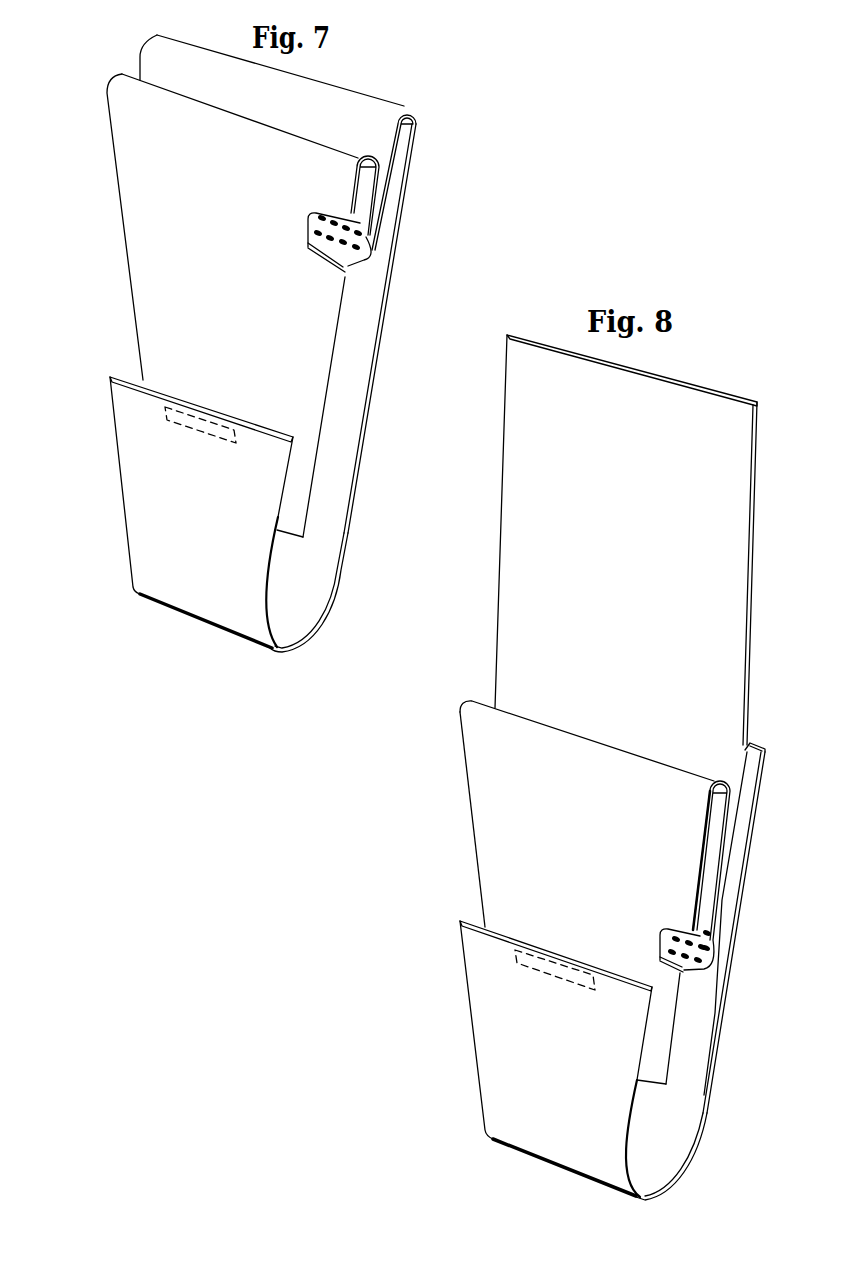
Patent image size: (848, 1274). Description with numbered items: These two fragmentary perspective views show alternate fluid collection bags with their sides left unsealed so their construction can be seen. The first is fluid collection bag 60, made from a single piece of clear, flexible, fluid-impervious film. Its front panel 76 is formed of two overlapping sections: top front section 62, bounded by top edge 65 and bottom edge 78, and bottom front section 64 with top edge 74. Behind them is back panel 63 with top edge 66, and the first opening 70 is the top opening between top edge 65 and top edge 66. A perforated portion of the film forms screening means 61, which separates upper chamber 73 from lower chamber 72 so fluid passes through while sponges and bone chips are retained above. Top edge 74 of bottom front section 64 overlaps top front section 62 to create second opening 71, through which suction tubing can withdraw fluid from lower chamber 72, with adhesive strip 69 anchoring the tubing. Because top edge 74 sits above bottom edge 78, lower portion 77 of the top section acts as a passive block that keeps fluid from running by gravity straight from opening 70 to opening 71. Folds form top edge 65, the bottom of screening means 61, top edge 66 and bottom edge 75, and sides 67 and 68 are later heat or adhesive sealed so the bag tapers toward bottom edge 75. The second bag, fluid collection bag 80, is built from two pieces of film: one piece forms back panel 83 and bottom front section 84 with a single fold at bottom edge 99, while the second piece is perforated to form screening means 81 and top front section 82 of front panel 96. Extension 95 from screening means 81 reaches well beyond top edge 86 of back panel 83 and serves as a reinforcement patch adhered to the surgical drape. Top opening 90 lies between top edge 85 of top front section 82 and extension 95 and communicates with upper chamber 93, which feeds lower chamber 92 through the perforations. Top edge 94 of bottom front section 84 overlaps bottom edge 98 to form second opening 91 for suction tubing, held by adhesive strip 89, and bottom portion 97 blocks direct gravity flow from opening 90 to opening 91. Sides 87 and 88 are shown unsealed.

In FIG. 7, the fluid collection bag 60 is at (102, 123).
In FIG. 7, the screening means 61 is at (363, 243).
In FIG. 7, the top front section 62 is at (221, 249).
In FIG. 7, the back panel 63 is at (365, 288).
In FIG. 7, the bottom front section 64 is at (201, 545).
In FIG. 7, the top edge 65 is at (255, 119).
In FIG. 7, the top edge 66 is at (368, 94).
In FIG. 7, the side 67 is at (120, 288).
In FIG. 7, the side 68 is at (387, 333).
In FIG. 7, the adhesive strip 69 is at (218, 433).
In FIG. 7, the first opening 70 is at (163, 80).
In FIG. 7, the second opening 71 is at (178, 385).
In FIG. 7, the lower chamber 72 is at (277, 622).
In FIG. 7, the upper chamber 73 is at (381, 192).
In FIG. 7, the top edge 74 is at (250, 426).
In FIG. 7, the bottom edge 75 is at (175, 612).
In FIG. 7, the front panel 76 is at (110, 478).
In FIG. 7, the lower portion 77 is at (300, 467).
In FIG. 7, the bottom edge 78 is at (290, 537).
In FIG. 8, the fluid collection bag 80 is at (440, 893).
In FIG. 8, the screening means 81 is at (700, 953).
In FIG. 8, the top front section 82 is at (589, 854).
In FIG. 8, the back panel 83 is at (707, 995).
In FIG. 8, the bottom front section 84 is at (563, 1064).
In FIG. 8, the top edge 85 is at (577, 731).
In FIG. 8, the top edge 86 is at (753, 742).
In FIG. 8, the side 87 is at (468, 860).
In FIG. 8, the side 88 is at (722, 1050).
In FIG. 8, the adhesive strip 89 is at (560, 973).
In FIG. 8, the top opening 90 is at (537, 710).
In FIG. 8, the second opening 91 is at (513, 928).
In FIG. 8, the lower chamber 92 is at (637, 1133).
In FIG. 8, the upper chamber 93 is at (722, 858).
In FIG. 8, the top edge 94 is at (583, 963).
In FIG. 8, the extension 95 is at (730, 483).
In FIG. 8, the front panel 96 is at (455, 1027).
In FIG. 8, the bottom portion 97 is at (658, 1057).
In FIG. 8, the bottom edge 98 is at (647, 1085).
In FIG. 8, the bottom edge 99 is at (562, 1172).